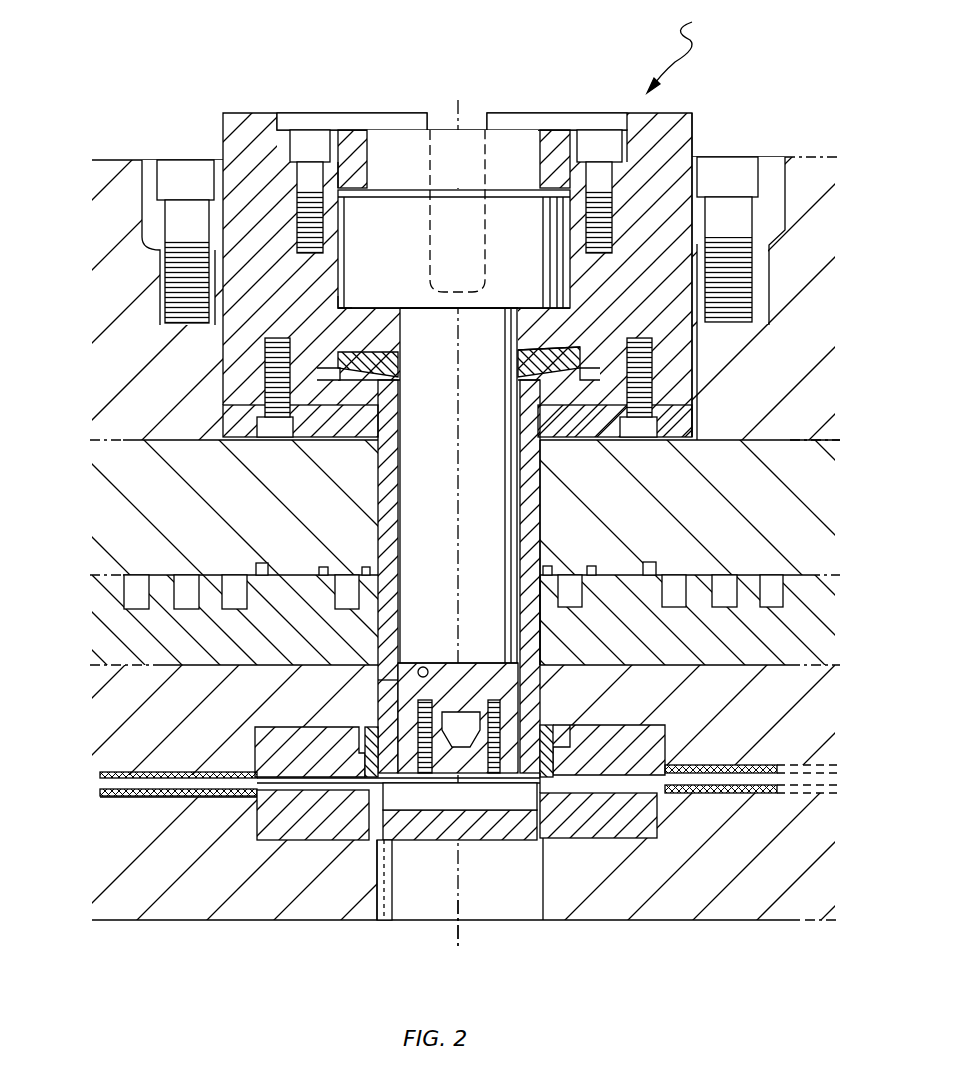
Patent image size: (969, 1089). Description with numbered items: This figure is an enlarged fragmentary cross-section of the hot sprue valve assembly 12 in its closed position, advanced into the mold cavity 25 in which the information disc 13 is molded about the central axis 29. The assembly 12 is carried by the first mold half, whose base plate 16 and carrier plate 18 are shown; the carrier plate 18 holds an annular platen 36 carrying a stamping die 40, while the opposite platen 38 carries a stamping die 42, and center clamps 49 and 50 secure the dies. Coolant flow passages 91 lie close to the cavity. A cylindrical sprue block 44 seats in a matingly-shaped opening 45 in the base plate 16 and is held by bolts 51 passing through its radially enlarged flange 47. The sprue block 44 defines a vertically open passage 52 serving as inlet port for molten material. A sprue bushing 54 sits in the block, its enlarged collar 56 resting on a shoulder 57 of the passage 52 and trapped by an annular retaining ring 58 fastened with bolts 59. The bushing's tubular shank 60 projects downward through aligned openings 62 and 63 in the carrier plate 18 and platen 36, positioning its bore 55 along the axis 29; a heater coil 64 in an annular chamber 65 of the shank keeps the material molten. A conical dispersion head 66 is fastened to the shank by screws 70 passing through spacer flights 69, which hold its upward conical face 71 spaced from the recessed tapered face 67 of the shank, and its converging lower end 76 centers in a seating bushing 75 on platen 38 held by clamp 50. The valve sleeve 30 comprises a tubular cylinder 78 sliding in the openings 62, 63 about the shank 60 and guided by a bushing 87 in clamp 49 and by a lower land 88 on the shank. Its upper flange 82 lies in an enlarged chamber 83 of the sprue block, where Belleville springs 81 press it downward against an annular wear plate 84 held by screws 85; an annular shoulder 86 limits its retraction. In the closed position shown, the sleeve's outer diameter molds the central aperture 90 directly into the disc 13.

The hot sprue valve assembly 12 is at (687, 54).
The information disc 13 is at (185, 790).
The base plate 16 is at (110, 168).
The carrier plate 18 is at (160, 442).
The mold cavity 25 is at (142, 778).
The central axis 29 is at (462, 905).
The valve sleeve 30 is at (548, 520).
The platen 36 is at (158, 640).
The platen 38 is at (192, 920).
The stamping die 40 is at (718, 766).
The stamping die 42 is at (703, 794).
The sprue block 44 is at (690, 372).
The opening 45 is at (222, 335).
The flange 47 is at (772, 176).
The center clamp 49 is at (265, 728).
The center clamp 50 is at (265, 812).
The bolts 51 is at (736, 175).
The passage 52 is at (345, 252).
The sprue bushing 54 is at (432, 454).
The bore 55 is at (462, 663).
The collar 56 is at (412, 294).
The shoulder 57 is at (348, 300).
The retaining ring 58 is at (362, 135).
The bolts 59 is at (318, 142).
The shank 60 is at (410, 513).
The opening 62 is at (530, 468).
The opening 63 is at (542, 630).
The heater coil 64 is at (418, 668).
The chamber 65 is at (390, 680).
The dispersion head 66 is at (378, 840).
The tapered face 67 is at (552, 728).
The spacer flights 69 is at (466, 712).
The fastening screws 70 is at (400, 812).
The conical face 71 is at (494, 700).
The seating bushing 75 is at (548, 790).
The lower end 76 is at (497, 812).
The cylinder 78 is at (535, 545).
The springs 81 is at (540, 358).
The flange 82 is at (312, 440).
The chamber 83 is at (340, 356).
The wear plate 84 is at (690, 418).
The screws 85 is at (640, 436).
The shoulder 86 is at (582, 368).
The bushing 87 is at (578, 740).
The land 88 is at (372, 727).
The central aperture 90 is at (372, 795).
The flow passages 91 is at (232, 590).